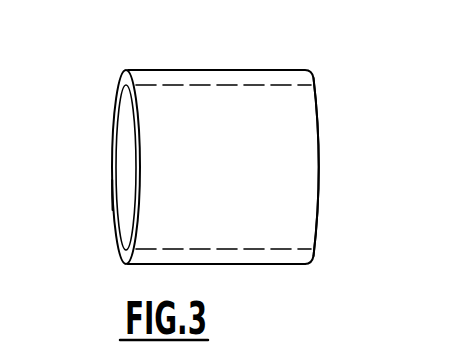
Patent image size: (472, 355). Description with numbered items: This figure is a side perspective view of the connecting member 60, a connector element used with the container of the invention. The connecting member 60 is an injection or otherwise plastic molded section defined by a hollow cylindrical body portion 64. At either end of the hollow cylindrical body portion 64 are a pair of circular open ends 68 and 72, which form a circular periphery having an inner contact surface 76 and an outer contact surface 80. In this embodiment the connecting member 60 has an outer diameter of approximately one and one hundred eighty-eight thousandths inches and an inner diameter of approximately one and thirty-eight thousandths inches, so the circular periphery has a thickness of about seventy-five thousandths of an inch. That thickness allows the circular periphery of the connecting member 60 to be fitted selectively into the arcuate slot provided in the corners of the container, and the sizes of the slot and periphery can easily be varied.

The connecting member 60 is at (160, 50).
The hollow cylindrical body portion 64 is at (250, 266).
The circular open end 68 is at (103, 196).
The circular open end 72 is at (313, 178).
The inner contact surface 76 is at (133, 166).
The outer contact surface 80 is at (117, 85).